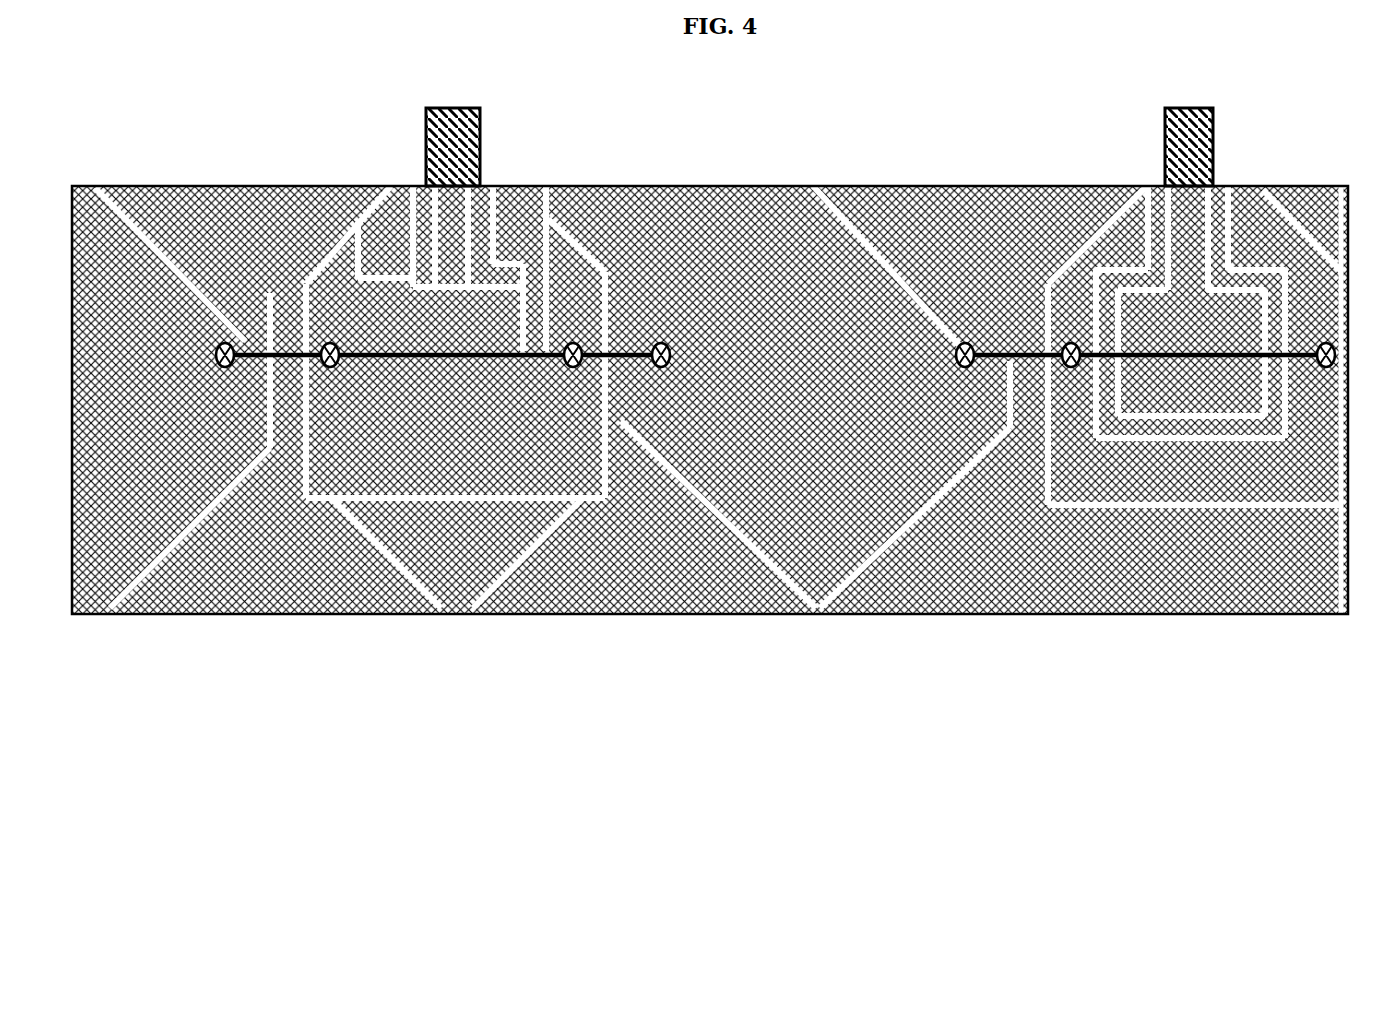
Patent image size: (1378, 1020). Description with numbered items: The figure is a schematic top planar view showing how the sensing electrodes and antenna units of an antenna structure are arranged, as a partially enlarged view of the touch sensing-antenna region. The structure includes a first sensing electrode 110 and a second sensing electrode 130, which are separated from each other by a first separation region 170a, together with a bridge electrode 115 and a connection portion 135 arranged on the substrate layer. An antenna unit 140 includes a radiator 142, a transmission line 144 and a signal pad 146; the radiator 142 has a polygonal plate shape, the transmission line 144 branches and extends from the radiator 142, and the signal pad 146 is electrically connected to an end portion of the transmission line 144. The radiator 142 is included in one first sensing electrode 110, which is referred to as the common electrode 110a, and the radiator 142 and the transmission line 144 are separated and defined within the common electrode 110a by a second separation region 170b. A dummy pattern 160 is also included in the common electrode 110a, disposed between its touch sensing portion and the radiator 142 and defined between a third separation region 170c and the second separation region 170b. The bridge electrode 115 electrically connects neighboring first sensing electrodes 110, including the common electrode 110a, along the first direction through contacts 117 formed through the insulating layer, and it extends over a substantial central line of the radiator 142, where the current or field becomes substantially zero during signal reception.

The first sensing electrode 110 is at (122, 604).
The common electrode 110a is at (437, 467).
The bridge electrode 115 is at (273, 332).
The contact 117 is at (720, 407).
The second sensing electrode 130 is at (318, 588).
The connection portion 135 is at (617, 390).
The antenna unit 140 is at (561, 205).
The radiator 142 is at (538, 323).
The transmission line 144 is at (445, 206).
The signal pad 146 is at (472, 125).
The dummy pattern 160 is at (547, 437).
The first separation region 170a is at (127, 218).
The second separation region 170b is at (380, 275).
The third separation region 170c is at (592, 330).